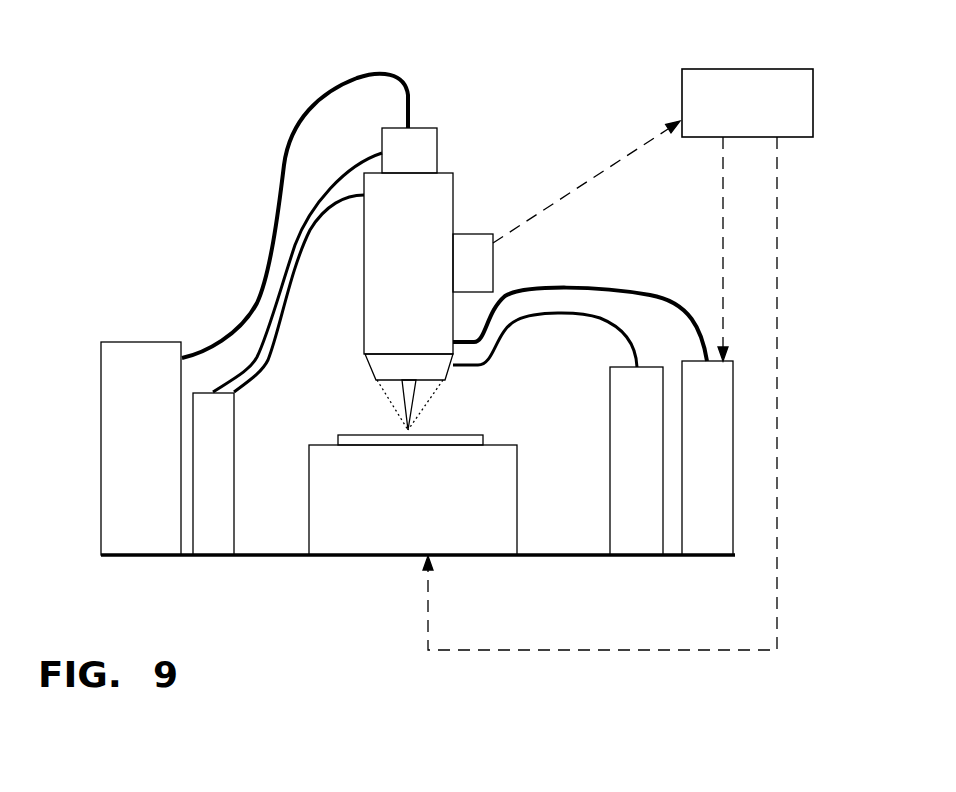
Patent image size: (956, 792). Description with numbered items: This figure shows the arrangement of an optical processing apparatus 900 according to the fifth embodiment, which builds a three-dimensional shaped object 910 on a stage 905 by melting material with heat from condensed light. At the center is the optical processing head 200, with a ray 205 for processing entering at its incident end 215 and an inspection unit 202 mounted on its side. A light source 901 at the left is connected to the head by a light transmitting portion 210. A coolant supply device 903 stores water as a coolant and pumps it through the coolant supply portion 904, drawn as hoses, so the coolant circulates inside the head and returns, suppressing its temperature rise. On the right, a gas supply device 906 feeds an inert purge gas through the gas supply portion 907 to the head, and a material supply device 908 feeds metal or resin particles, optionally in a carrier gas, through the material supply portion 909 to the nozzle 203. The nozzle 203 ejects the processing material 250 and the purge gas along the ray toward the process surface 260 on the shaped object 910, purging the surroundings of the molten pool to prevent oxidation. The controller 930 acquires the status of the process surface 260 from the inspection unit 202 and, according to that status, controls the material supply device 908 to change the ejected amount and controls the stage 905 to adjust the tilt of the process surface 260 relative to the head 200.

The optical processing apparatus 900 is at (194, 144).
The optical processing head 200 is at (457, 160).
The inspection unit 202 is at (489, 246).
The nozzle 203 is at (378, 365).
The ray for processing 205 is at (412, 412).
The light transmitting portion 210 is at (282, 130).
The incident end 215 is at (412, 125).
The processing material 250 is at (430, 403).
The process surface 260 is at (372, 433).
The light source 901 is at (118, 342).
The coolant supply device 903 is at (208, 543).
The coolant supply portion 904 is at (247, 368).
The stage 905 is at (343, 543).
The gas supply device 906 is at (643, 545).
The gas supply portion 907 is at (590, 321).
The material supply device 908 is at (707, 545).
The material supply portion 909 is at (623, 288).
The shaped object 910 is at (445, 455).
The controller 930 is at (682, 102).